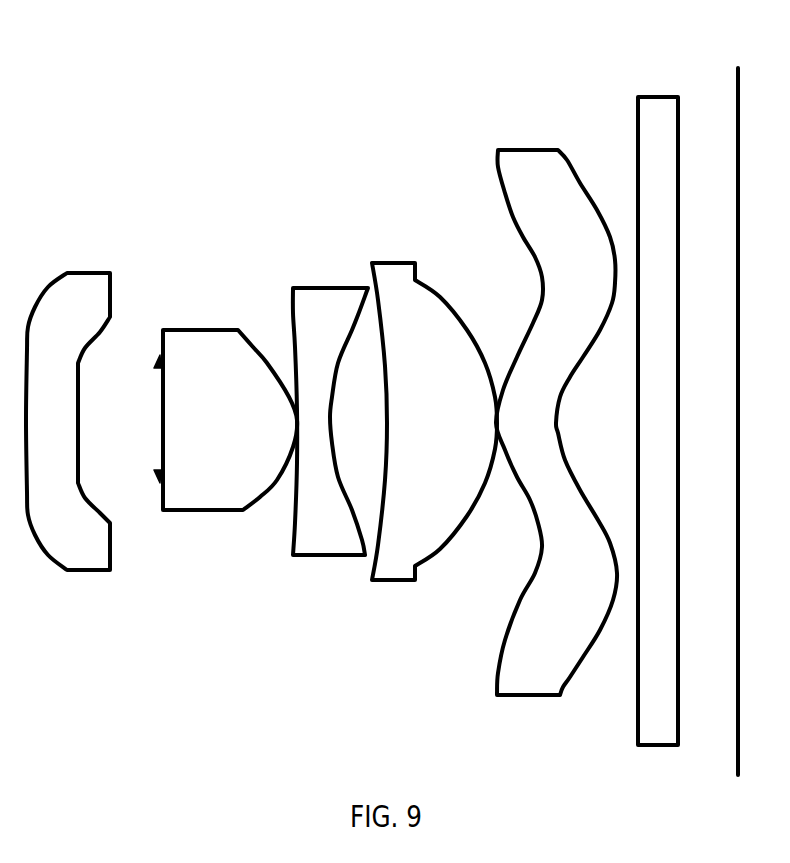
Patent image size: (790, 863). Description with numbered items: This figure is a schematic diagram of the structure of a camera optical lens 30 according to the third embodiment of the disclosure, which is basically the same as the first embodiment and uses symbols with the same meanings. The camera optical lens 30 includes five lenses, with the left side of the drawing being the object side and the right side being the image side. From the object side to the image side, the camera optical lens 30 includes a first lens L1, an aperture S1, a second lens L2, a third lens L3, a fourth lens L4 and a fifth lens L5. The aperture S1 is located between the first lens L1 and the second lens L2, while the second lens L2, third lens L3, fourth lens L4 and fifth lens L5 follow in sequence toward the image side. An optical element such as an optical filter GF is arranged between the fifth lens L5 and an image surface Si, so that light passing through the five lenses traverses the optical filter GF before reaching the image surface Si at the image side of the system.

The camera optical lens 30 is at (393, 33).
The first lens L1 is at (68, 409).
The aperture S1 is at (149, 406).
The second lens L2 is at (230, 409).
The third lens L3 is at (330, 409).
The fourth lens L4 is at (434, 410).
The fifth lens L5 is at (556, 409).
The optical filter GF is at (658, 408).
The image surface Si is at (736, 409).